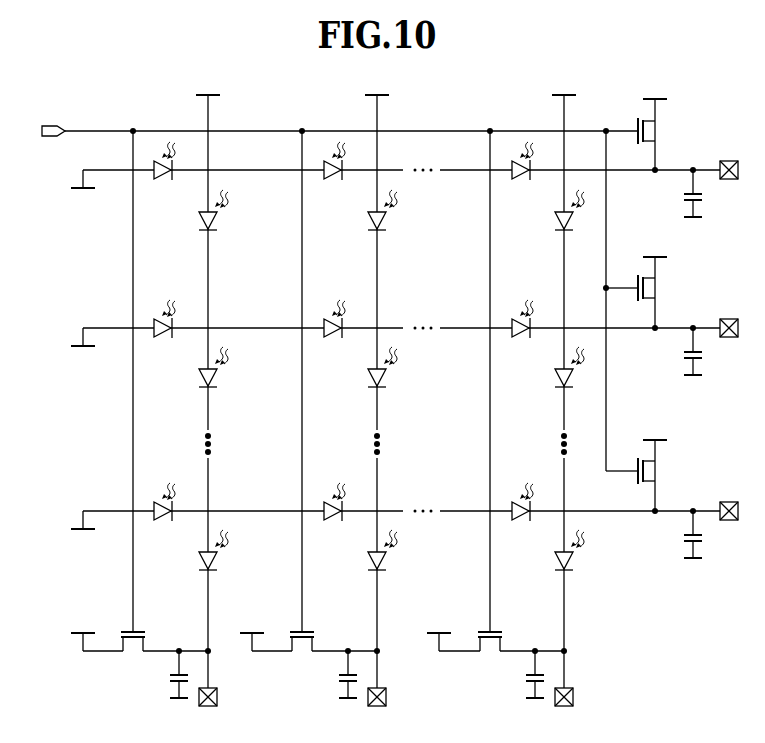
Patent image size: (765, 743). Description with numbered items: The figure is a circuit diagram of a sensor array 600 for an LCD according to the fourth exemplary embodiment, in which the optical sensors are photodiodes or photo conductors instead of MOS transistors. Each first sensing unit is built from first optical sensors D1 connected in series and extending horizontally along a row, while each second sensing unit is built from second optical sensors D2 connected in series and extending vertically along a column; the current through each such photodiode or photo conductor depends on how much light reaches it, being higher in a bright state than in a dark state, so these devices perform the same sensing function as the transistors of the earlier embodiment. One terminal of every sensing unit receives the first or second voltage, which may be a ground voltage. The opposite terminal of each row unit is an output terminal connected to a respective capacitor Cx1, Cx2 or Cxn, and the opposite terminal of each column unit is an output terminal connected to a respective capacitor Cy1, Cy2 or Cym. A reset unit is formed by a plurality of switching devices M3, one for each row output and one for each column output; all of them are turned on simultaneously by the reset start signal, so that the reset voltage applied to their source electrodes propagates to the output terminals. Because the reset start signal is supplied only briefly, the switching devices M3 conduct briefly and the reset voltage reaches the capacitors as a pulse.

The sensor array 600 is at (491, 77).
The first optical sensor D1 is at (343, 340).
The second optical sensor D2 is at (397, 384).
The switching device M3 is at (368, 369).
The capacitor Cx1 is at (682, 202).
The capacitor Cx2 is at (682, 360).
The capacitor Cxn is at (681, 543).
The capacitor Cy1 is at (182, 688).
The capacitor Cy2 is at (351, 688).
The capacitor Cym is at (537, 688).